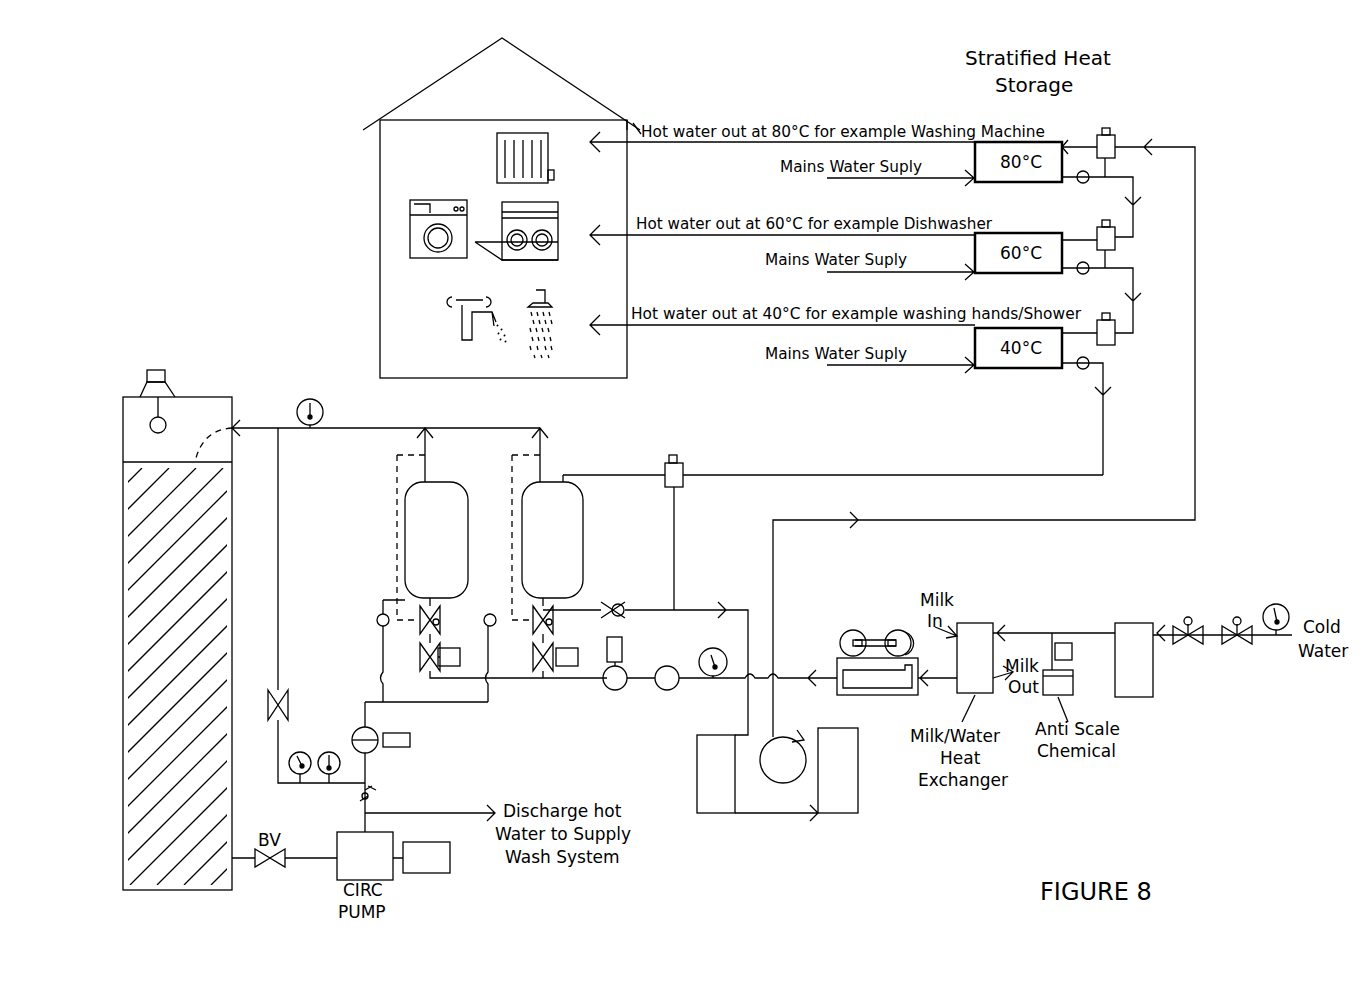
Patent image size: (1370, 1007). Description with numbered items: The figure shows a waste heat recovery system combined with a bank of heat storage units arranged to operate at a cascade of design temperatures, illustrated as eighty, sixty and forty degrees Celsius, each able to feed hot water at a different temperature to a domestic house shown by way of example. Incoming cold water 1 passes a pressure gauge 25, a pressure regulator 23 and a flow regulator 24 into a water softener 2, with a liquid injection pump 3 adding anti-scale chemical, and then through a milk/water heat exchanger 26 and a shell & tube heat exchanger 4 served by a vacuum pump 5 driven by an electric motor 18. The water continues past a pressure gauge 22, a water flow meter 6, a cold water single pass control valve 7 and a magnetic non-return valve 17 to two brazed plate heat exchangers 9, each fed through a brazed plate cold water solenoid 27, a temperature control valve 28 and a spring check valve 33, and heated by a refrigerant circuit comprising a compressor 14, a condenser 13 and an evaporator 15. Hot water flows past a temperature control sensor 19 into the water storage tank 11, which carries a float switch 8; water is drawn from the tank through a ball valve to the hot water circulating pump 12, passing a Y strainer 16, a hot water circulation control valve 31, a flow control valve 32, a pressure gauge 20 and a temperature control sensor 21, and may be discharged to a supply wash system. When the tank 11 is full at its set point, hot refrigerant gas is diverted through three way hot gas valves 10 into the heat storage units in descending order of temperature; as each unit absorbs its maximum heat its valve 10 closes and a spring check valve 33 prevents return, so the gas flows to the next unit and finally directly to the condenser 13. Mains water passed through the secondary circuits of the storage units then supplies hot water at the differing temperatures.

The incoming cold water 1 is at (1309, 614).
The water softener 2 is at (1134, 660).
The liquid injection pump 3 is at (1058, 677).
The shell & tube heat exchanger 4 is at (860, 697).
The vacuum pump 5 is at (899, 635).
The water flow meter 6 is at (667, 691).
The cold water single pass (instant heat) control valve 7 is at (615, 677).
The float switch 8 is at (148, 372).
The brazed plate heat exchanger 9 is at (494, 540).
The three way hot gas valve 10 is at (889, 360).
The water storage tank or reservoir 11 is at (314, 643).
The hot water circulating pump 12 is at (393, 856).
The condenser 13 is at (716, 774).
The compressor 14 is at (783, 756).
The evaporator 15 is at (796, 774).
The Y strainer 16 is at (358, 797).
The magnetic non-return valve 17 is at (619, 603).
The electric motor for vacuum pump 18 is at (868, 633).
The temperature control sensor #2 19 is at (300, 402).
The pressure gauge #1 20 is at (299, 756).
The temperature control sensor #1 21 is at (328, 756).
The pressure gauge #2 22 is at (713, 676).
The pressure regulator 23 is at (1237, 640).
The flow regulator 24 is at (1188, 640).
The pressure gauge #3 25 is at (1276, 634).
The milk/water heat exchanger 26 is at (972, 623).
The brazed plate cold water solenoid 27 is at (422, 659).
The temperature control valve 28 is at (436, 612).
The hot water circulation control valve 31 is at (410, 741).
The flow control valve 32 is at (275, 710).
The spring check valve 33 is at (377, 630).